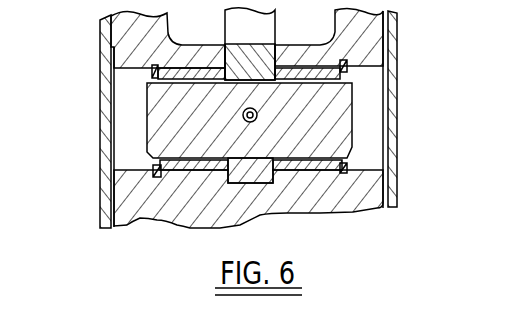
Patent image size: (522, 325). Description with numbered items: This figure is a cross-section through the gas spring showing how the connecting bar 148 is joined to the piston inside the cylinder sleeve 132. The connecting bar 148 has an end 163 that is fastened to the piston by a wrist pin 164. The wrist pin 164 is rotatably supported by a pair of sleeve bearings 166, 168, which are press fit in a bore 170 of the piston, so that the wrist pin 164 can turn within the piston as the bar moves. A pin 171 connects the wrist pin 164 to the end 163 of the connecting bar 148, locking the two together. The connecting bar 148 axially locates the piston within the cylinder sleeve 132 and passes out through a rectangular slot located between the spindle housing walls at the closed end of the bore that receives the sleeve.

The cylinder sleeve 132 is at (100, 137).
The connecting bar 148 is at (263, 25).
The end 163 is at (230, 184).
The wrist pin 164 is at (343, 105).
The sleeve bearing 166 is at (172, 163).
The sleeve bearing 168 is at (335, 175).
The bore 170 is at (389, 75).
The pin 171 is at (243, 118).